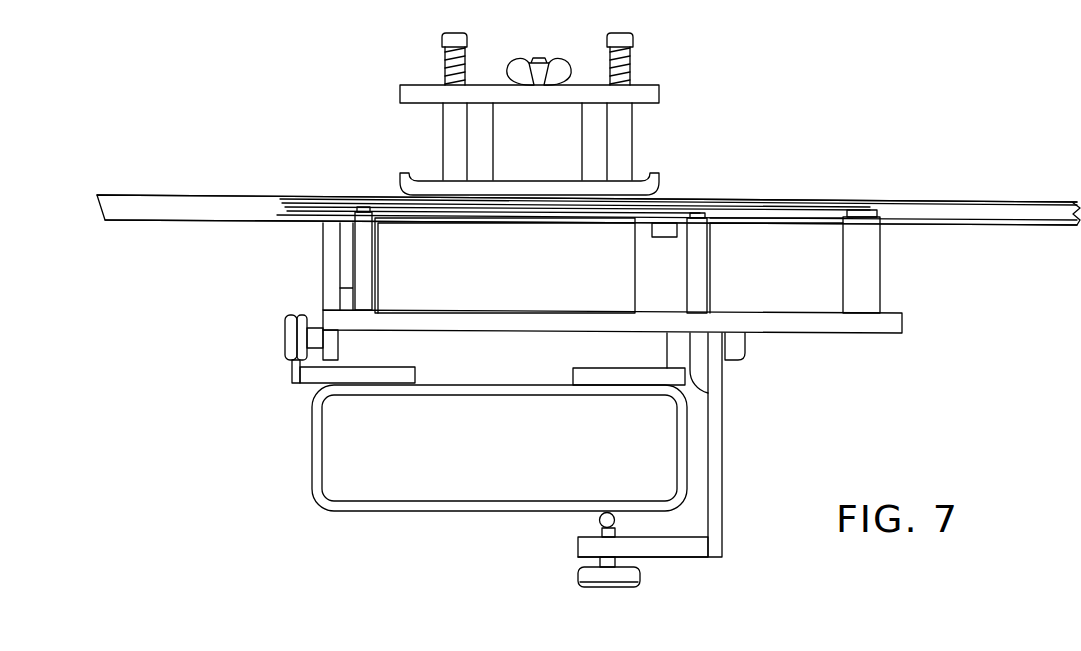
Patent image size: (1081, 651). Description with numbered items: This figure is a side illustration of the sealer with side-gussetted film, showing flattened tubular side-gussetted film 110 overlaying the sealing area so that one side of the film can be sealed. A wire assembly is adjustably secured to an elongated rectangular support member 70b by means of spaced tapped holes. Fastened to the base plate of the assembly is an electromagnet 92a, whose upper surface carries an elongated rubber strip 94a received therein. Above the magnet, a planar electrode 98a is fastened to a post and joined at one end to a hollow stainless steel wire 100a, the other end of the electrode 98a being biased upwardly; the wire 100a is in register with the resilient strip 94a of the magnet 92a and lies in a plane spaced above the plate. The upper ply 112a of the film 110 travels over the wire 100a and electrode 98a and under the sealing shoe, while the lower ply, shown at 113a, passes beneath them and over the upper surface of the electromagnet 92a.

The support member 70b is at (347, 298).
The electromagnet 92a is at (510, 279).
The rubber strip 94a is at (663, 228).
The planar electrode 98a is at (658, 173).
The hollow stainless steel wire 100a is at (792, 210).
The flattened tubular side-gussetted film 110 is at (914, 198).
The upper ply 112a is at (1032, 200).
The table lower edge 113a is at (1015, 228).